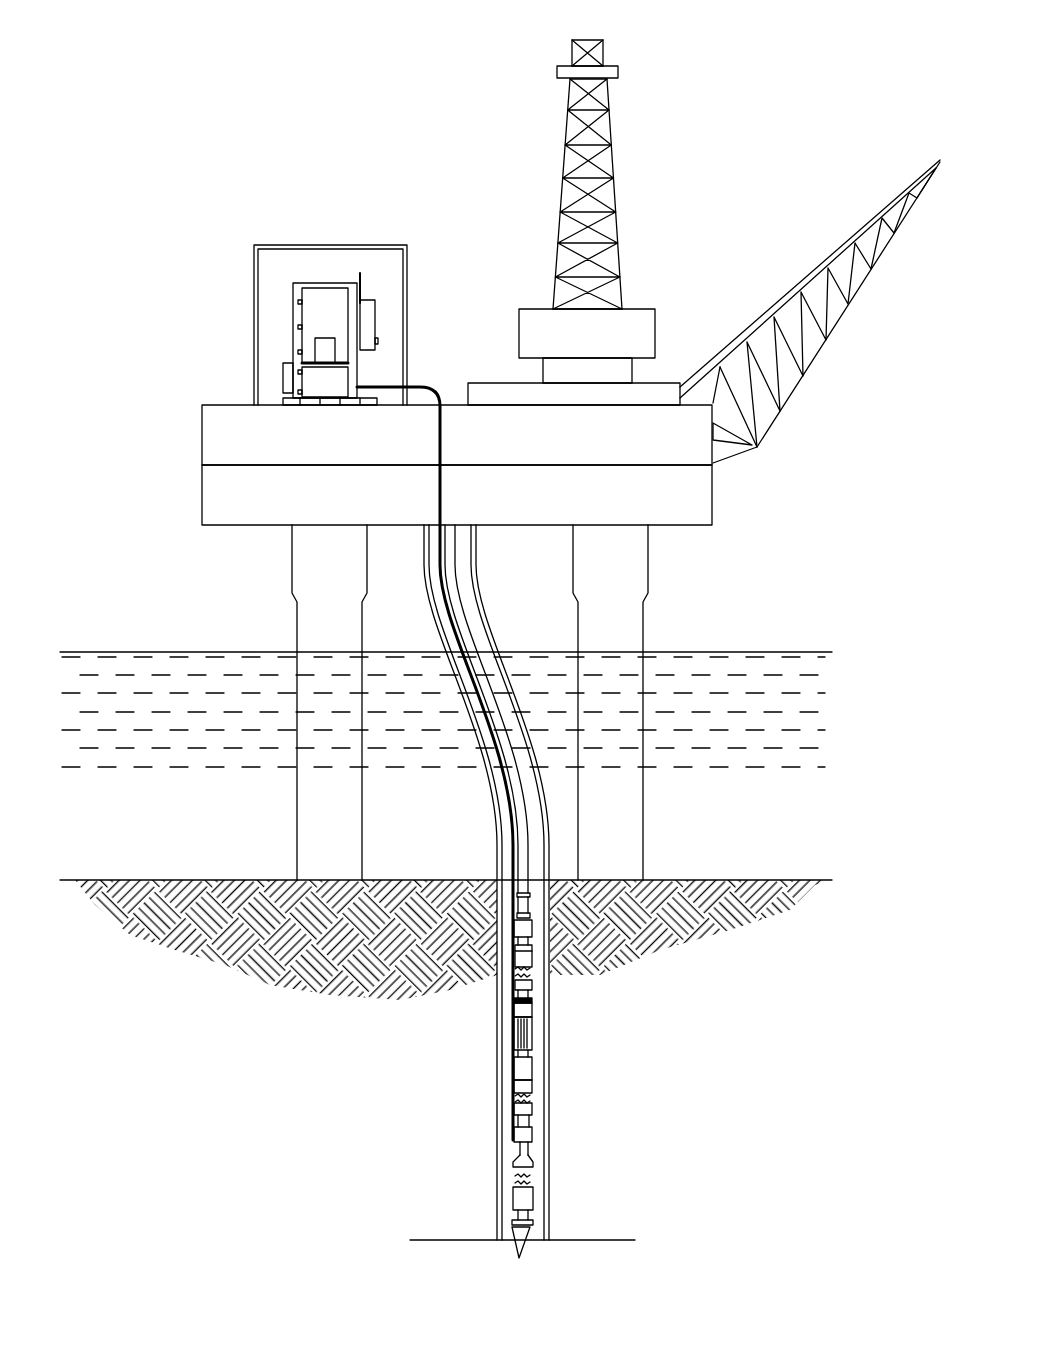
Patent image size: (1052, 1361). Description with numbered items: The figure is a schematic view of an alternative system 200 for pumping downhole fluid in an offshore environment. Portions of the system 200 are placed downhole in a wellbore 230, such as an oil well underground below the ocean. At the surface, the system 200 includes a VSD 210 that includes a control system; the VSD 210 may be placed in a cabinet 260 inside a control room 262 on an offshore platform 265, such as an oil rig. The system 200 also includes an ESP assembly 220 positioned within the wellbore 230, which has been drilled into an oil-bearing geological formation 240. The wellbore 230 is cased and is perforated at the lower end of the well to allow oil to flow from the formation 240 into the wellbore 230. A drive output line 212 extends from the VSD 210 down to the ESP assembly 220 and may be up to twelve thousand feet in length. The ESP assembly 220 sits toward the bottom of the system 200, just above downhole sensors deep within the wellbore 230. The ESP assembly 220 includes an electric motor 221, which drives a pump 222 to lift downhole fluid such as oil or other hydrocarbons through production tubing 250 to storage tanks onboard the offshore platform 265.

The system 200 is at (137, 30).
The VSD 210 is at (327, 352).
The drive output line 212 is at (503, 795).
The ESP assembly 220 is at (546, 1056).
The electric motor 221 is at (523, 1203).
The pump 222 is at (532, 982).
The wellbore 230 is at (497, 1112).
The oil-bearing geological formation 240 is at (696, 1145).
The production tubing 250 is at (523, 858).
The cabinet 260 is at (293, 303).
The control room 262 is at (328, 243).
The offshore platform 265 is at (202, 438).